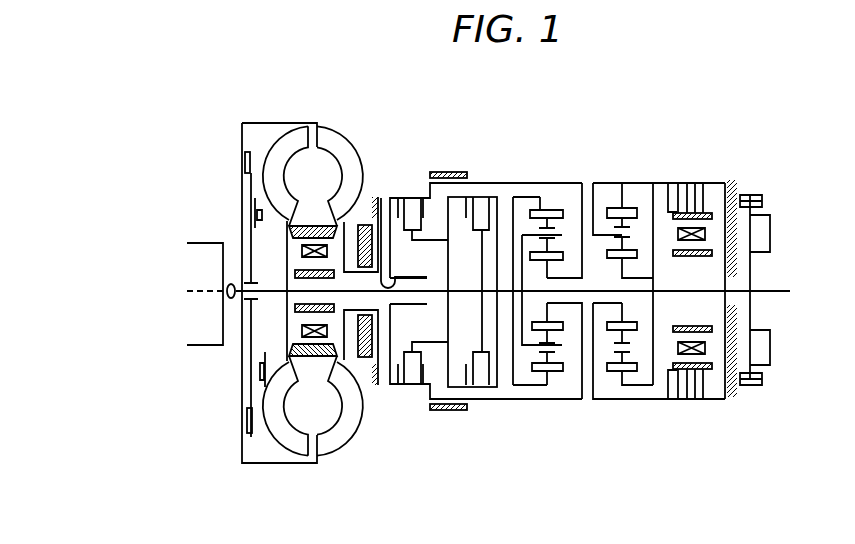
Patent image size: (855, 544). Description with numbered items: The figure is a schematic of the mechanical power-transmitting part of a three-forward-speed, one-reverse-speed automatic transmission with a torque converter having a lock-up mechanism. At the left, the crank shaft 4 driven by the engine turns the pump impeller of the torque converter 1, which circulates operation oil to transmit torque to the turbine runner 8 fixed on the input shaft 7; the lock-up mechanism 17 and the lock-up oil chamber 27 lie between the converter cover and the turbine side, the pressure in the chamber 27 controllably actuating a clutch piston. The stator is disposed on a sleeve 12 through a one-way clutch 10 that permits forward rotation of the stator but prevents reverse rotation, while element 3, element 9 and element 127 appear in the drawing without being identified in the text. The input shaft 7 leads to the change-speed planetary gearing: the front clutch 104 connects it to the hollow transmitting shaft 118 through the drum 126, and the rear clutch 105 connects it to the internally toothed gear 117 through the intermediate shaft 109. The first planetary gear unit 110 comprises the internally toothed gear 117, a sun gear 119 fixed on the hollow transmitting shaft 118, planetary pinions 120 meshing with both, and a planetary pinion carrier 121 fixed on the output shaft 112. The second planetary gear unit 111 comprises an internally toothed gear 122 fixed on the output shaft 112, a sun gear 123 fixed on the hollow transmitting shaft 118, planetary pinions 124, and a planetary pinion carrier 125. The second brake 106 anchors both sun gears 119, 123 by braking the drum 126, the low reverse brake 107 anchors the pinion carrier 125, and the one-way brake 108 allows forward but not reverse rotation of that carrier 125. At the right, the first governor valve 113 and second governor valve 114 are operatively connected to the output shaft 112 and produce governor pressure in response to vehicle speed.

The torque converter 1 is at (354, 146).
The pump impeller 3 is at (357, 157).
The crank shaft 4 is at (208, 290).
The input shaft 7 is at (270, 298).
The turbine runner 8 is at (292, 141).
The stator 9 is at (320, 206).
The one-way clutch 10 is at (302, 263).
The sleeve 12 is at (388, 286).
The lock-up mechanism 17 is at (240, 185).
The lock-up oil chamber 27 is at (243, 215).
The front clutch 104 is at (418, 198).
The rear clutch 105 is at (497, 196).
The second brake 106 is at (452, 171).
The low reverse brake 107 is at (691, 192).
The one-way brake 108 is at (716, 289).
The intermediate shaft 109 is at (490, 287).
The first planetary gear unit 110 is at (566, 197).
The second planetary gear unit 111 is at (616, 198).
The output shaft 112 is at (768, 290).
The first governor valve 113 is at (768, 341).
The second governor valve 114 is at (765, 233).
The internally toothed gear 117 is at (538, 208).
The hollow transmitting shaft 118 is at (583, 302).
The sun gear 119 is at (527, 266).
The planetary pinions 120 is at (530, 246).
The planetary pinion carrier 121 is at (522, 294).
The internally toothed gear 122 is at (626, 206).
The sun gear 123 is at (636, 258).
The planetary pinions 124 is at (658, 200).
The planetary pinion carrier 125 is at (590, 200).
The drum 126 is at (494, 196).
The brake band 127 is at (366, 376).